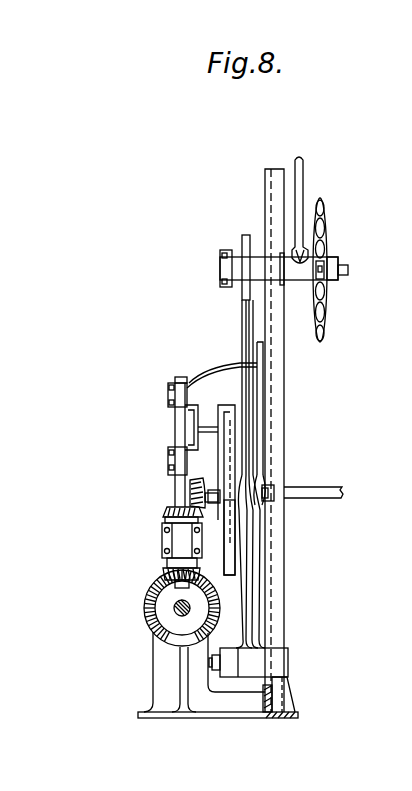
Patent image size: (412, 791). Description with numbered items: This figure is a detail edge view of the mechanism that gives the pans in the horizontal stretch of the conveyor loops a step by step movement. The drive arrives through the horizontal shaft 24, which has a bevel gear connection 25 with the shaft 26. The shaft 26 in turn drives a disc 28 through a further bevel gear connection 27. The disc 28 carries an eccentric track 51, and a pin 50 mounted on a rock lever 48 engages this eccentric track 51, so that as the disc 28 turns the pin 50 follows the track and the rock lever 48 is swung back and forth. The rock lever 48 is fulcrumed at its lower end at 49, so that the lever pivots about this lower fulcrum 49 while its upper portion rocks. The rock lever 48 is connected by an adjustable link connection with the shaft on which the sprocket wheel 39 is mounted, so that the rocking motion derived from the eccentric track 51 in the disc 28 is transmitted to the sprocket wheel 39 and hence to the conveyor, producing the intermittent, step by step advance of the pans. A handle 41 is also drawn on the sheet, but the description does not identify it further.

The horizontal shaft 24 is at (178, 615).
The bevel gear connection 25 is at (167, 576).
The shaft 26 is at (180, 490).
The bevel gear connection 27 is at (165, 511).
The disc 28 is at (228, 563).
The sprocket wheel 39 is at (326, 227).
The handle lever 41 is at (303, 179).
The rock lever 48 is at (240, 318).
The fulcrum 49 is at (252, 660).
The pin 50 is at (238, 488).
The eccentric track 51 is at (232, 440).